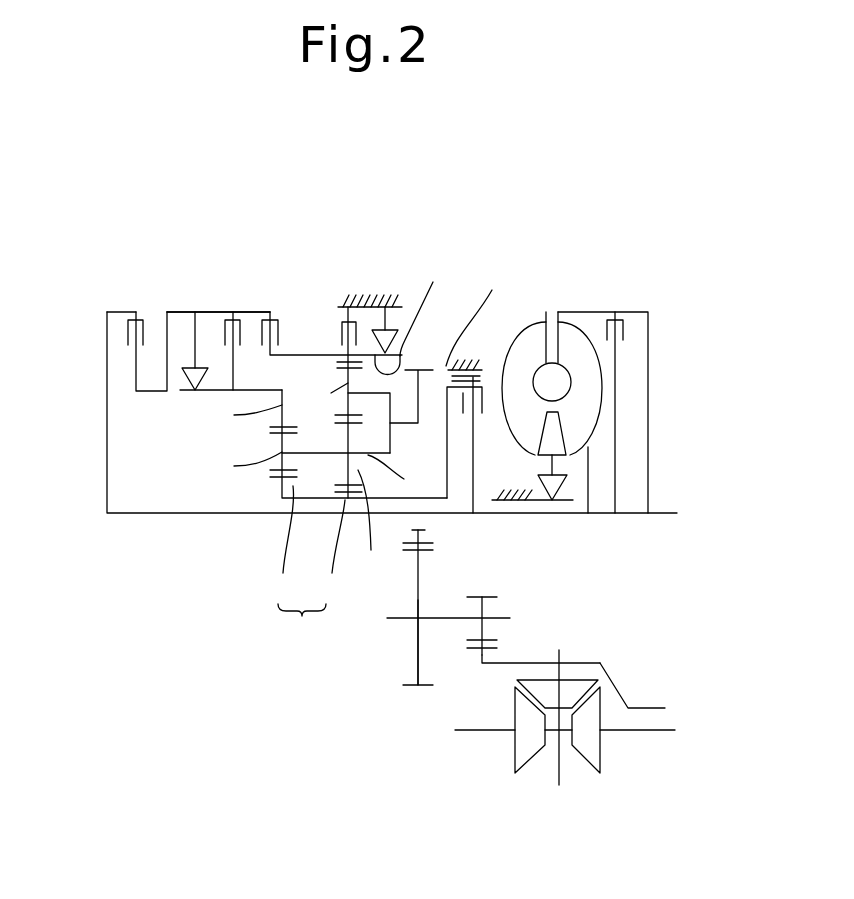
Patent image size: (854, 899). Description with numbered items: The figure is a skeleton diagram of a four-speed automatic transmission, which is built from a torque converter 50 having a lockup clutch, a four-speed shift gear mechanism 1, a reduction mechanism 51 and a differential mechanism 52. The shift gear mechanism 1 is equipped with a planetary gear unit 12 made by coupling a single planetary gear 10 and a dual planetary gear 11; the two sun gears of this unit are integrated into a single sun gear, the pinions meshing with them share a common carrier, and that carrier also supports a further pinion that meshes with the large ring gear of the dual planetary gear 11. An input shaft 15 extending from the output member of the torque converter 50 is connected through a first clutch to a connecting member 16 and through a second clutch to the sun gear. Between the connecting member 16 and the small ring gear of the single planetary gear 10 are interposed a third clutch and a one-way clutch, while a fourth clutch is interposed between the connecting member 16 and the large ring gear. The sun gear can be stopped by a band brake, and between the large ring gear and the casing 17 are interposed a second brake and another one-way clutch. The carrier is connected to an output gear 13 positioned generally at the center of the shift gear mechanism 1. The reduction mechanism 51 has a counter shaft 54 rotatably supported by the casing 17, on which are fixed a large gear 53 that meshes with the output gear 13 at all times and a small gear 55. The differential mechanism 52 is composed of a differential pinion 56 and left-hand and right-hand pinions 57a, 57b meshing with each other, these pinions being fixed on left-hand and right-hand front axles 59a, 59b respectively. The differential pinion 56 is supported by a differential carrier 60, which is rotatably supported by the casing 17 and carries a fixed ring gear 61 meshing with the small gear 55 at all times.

The four-speed shift gear mechanism 1 is at (99, 294).
The single planetary gear 10 is at (279, 380).
The dual planetary gear 11 is at (336, 352).
The planetary gear unit 12 is at (282, 168).
The output gear 13 is at (434, 368).
The input shaft 15 is at (521, 513).
The connecting member 16 is at (203, 312).
The casing 17 is at (399, 303).
The torque converter 50 is at (552, 302).
The reduction mechanism 51 is at (402, 643).
The differential mechanism 52 is at (505, 766).
The large gear 53 is at (425, 662).
The counter shaft 54 is at (443, 616).
The small gear 55 is at (484, 608).
The differential pinion 56 is at (577, 688).
The left-hand pinion 57a is at (526, 758).
The right-hand pinion 57b is at (588, 758).
The left-hand front axle 59a is at (460, 733).
The right-hand front axle 59b is at (668, 733).
The differential carrier 60 is at (620, 680).
The ring gear 61 is at (484, 661).